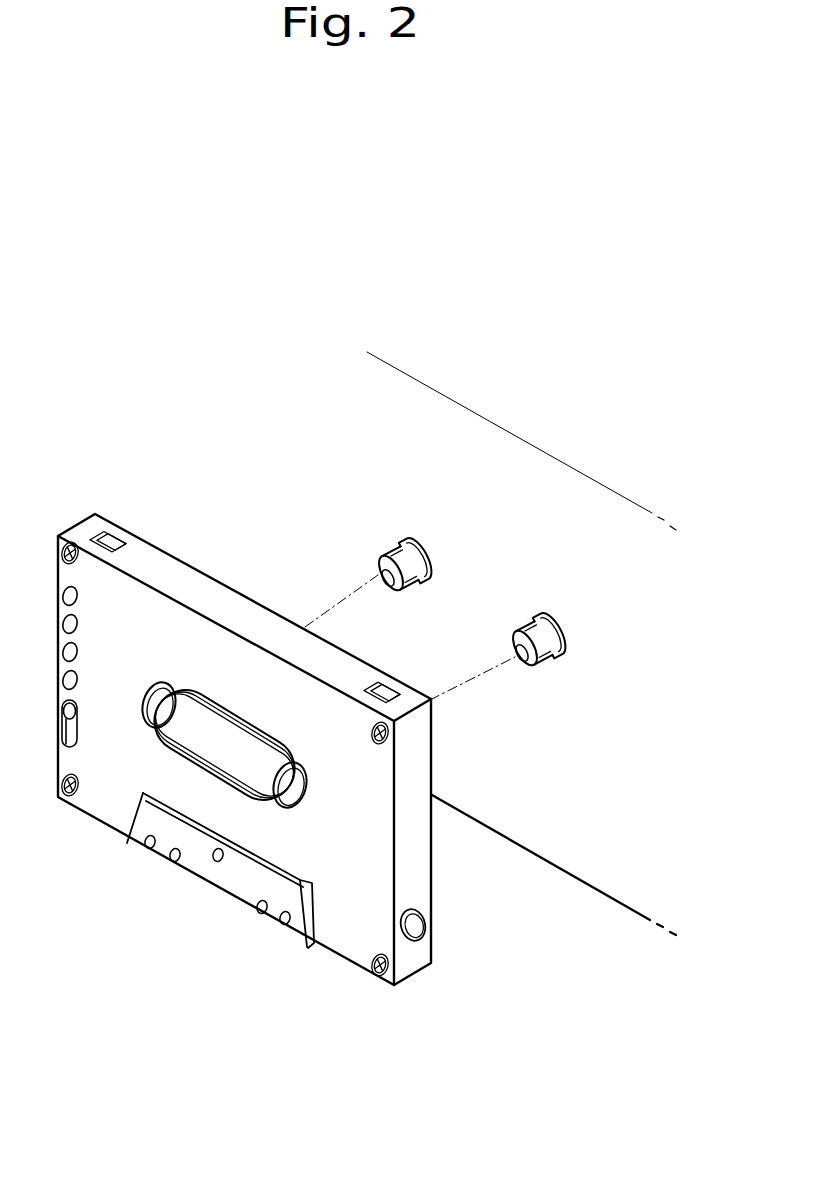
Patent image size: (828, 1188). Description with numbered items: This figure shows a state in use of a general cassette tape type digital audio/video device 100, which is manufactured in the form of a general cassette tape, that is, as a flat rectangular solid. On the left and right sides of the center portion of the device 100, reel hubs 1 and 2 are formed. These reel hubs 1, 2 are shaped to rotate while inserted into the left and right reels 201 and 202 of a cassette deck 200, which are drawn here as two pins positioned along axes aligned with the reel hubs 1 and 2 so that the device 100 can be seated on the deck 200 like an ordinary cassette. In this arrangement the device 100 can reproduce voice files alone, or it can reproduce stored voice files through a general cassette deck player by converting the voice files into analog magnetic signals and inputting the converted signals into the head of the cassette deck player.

The cassette tape digital audio/video device 100 is at (118, 480).
The reel hub 1 is at (163, 695).
The reel hub 2 is at (305, 790).
The cassette deck 200 is at (507, 500).
The left reel 201 is at (402, 560).
The right reel 202 is at (548, 642).